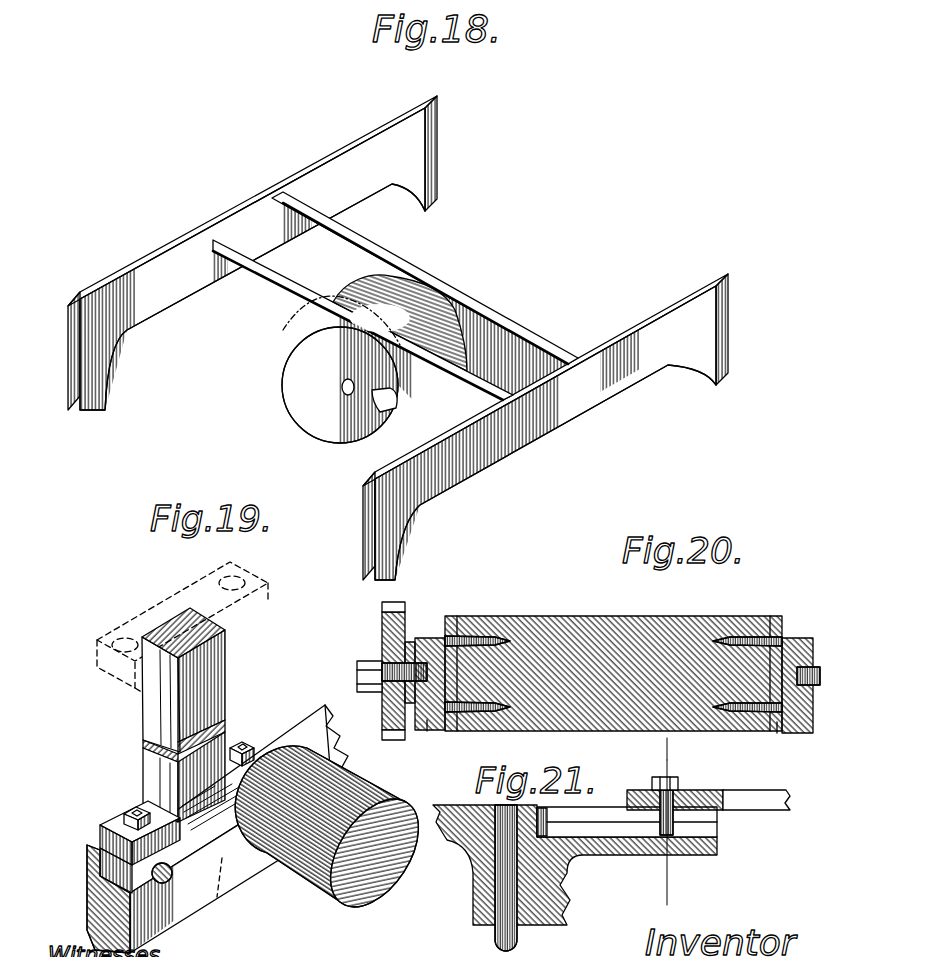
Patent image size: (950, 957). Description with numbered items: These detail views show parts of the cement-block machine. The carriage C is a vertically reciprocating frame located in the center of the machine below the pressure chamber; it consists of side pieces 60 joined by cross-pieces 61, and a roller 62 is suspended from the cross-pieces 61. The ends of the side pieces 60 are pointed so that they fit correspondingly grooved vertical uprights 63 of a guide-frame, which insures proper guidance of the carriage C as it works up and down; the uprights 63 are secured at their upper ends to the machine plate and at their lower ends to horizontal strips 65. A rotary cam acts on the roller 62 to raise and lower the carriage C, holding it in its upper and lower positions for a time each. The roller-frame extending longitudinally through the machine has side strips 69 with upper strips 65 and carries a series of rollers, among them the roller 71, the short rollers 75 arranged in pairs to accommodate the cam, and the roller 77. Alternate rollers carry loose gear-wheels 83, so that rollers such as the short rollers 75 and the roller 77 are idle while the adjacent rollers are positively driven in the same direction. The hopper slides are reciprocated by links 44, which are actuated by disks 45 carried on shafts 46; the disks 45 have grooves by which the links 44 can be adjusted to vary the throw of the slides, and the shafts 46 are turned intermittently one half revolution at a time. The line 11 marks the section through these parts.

In FIG. 18, the side pieces 60 is at (380, 178).
In FIG. 18, the cross-pieces 61 is at (390, 250).
In FIG. 18, the roller 62 is at (323, 425).
In FIG. 18, the carriage C is at (220, 290).
In FIG. 19, the vertical uprights 63 is at (155, 713).
In FIG. 19, the horizontal strips 65 is at (97, 844).
In FIG. 20, the horizontal strips 65 is at (430, 643).
In FIG. 19, the side strips 69 is at (98, 919).
In FIG. 20, the side strips 69 is at (427, 722).
In FIG. 19, the roller 71 is at (262, 903).
In FIG. 19, the short rollers 75 is at (370, 797).
In FIG. 19, the roller 77 is at (241, 891).
In FIG. 20, the roller 77 is at (513, 637).
In FIG. 20, the gear-wheels 83 is at (405, 610).
In FIG. 20, the section line 11 is at (632, 752).
In FIG. 21, the section line 11 is at (618, 875).
In FIG. 21, the links or rods 44 is at (753, 797).
In FIG. 21, the disks 45 is at (463, 852).
In FIG. 21, the shafts 46 is at (497, 927).